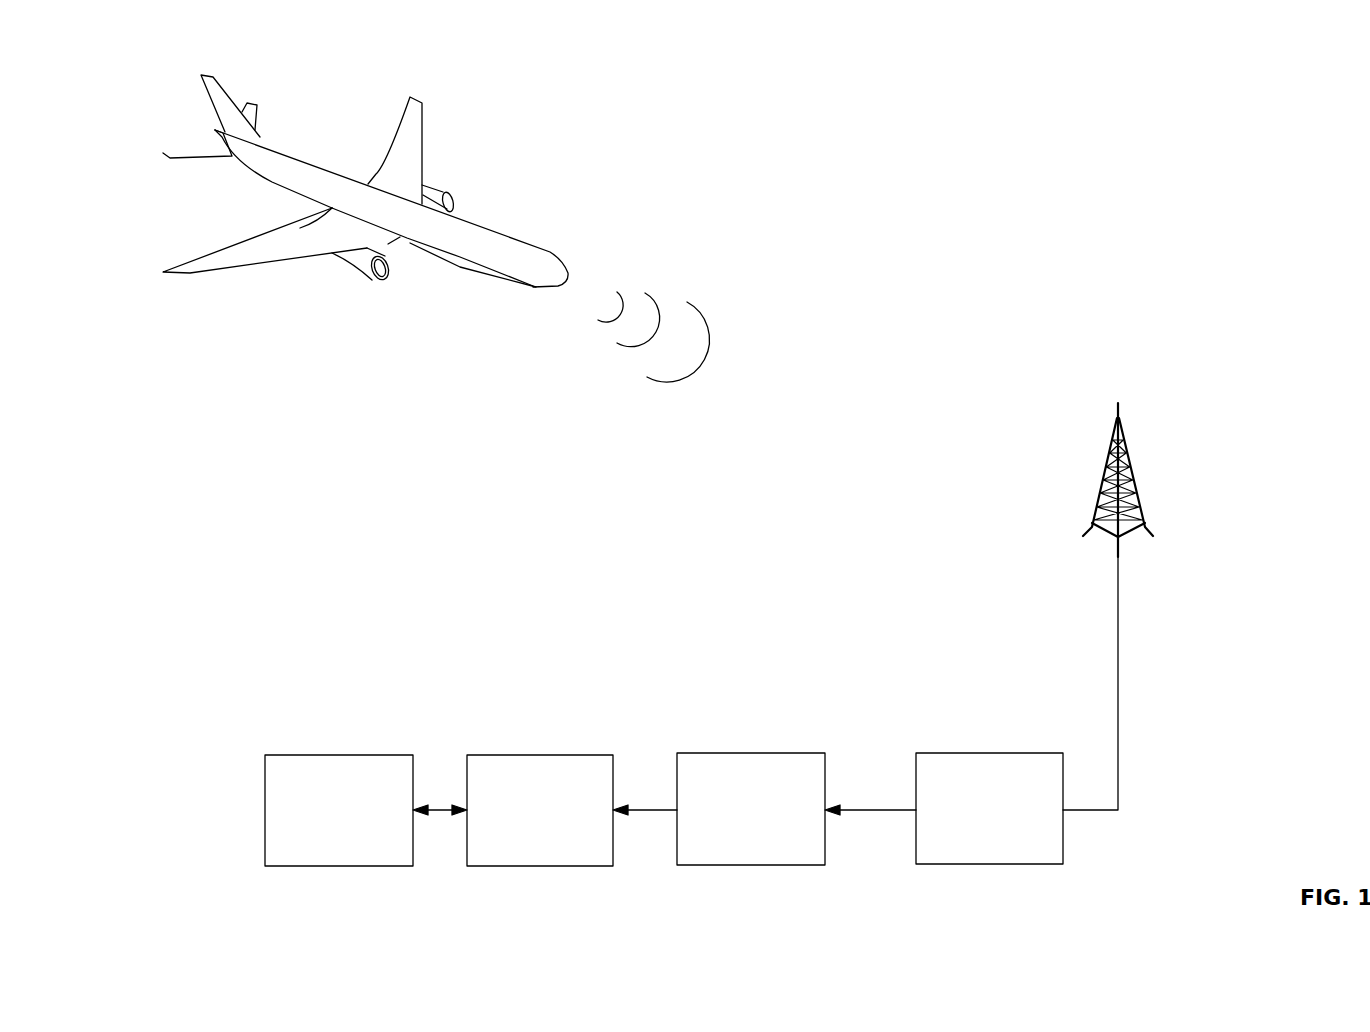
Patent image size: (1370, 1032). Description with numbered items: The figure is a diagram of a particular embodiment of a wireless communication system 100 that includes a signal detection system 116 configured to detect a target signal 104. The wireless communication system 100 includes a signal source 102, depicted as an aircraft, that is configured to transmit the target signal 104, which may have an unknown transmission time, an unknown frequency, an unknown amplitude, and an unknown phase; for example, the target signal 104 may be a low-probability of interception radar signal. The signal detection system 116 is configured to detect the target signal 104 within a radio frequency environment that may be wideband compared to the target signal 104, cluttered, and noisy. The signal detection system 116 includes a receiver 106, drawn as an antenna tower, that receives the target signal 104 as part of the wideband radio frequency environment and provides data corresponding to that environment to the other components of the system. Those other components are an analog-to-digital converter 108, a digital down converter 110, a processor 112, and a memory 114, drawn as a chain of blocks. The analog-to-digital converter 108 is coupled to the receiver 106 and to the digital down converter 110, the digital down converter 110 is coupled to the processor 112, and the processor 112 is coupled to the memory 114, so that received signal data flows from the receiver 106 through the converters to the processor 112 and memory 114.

The wireless communication system 100 is at (1247, 123).
The signal source 102 is at (488, 227).
The target signal 104 is at (677, 293).
The receiver 106 is at (1125, 452).
The analog-to-digital converter (ADC) 108 is at (988, 753).
The digital down converter (DDC) 110 is at (750, 753).
The processor 112 is at (542, 753).
The memory 114 is at (340, 753).
The signal detection system 116 is at (590, 593).